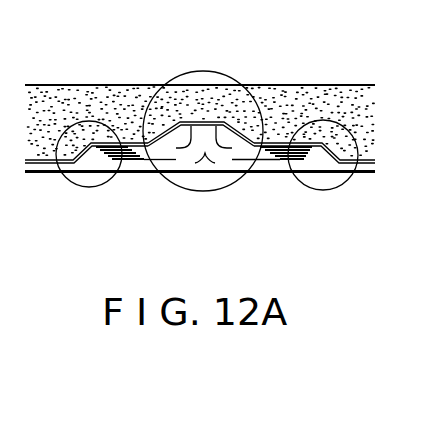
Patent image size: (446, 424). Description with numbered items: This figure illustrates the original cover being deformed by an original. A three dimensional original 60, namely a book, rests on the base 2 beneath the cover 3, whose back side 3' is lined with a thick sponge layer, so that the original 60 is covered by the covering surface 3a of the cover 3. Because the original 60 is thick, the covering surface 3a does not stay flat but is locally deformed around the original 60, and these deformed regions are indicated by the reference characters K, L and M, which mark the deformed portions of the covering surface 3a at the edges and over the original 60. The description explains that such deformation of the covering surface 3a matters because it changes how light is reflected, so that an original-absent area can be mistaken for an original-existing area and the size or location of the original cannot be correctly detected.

The substrate 2 is at (315, 170).
The passivation layer surface 3 is at (200, 53).
The stippled insulating layer 3' is at (201, 88).
The covering surface 3a is at (88, 160).
The three dimensional original 60 is at (187, 148).
The locally deformed portion K is at (100, 120).
The locally deformed portion L is at (225, 70).
The locally deformed portion M is at (320, 118).